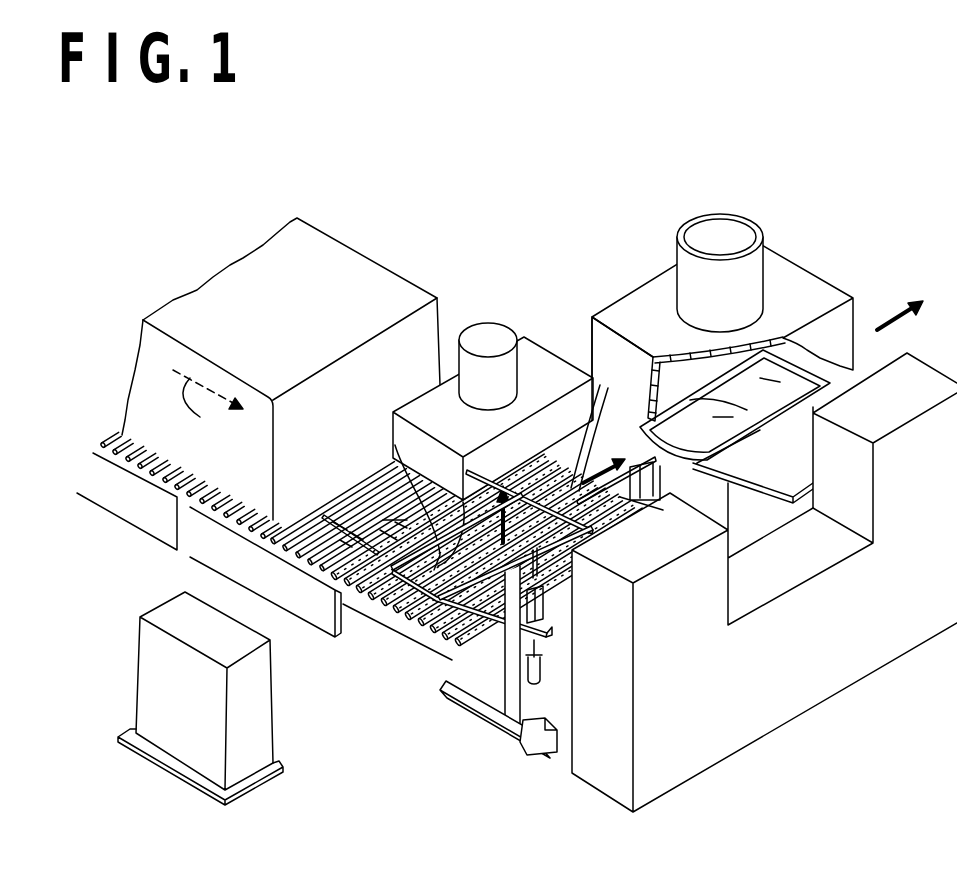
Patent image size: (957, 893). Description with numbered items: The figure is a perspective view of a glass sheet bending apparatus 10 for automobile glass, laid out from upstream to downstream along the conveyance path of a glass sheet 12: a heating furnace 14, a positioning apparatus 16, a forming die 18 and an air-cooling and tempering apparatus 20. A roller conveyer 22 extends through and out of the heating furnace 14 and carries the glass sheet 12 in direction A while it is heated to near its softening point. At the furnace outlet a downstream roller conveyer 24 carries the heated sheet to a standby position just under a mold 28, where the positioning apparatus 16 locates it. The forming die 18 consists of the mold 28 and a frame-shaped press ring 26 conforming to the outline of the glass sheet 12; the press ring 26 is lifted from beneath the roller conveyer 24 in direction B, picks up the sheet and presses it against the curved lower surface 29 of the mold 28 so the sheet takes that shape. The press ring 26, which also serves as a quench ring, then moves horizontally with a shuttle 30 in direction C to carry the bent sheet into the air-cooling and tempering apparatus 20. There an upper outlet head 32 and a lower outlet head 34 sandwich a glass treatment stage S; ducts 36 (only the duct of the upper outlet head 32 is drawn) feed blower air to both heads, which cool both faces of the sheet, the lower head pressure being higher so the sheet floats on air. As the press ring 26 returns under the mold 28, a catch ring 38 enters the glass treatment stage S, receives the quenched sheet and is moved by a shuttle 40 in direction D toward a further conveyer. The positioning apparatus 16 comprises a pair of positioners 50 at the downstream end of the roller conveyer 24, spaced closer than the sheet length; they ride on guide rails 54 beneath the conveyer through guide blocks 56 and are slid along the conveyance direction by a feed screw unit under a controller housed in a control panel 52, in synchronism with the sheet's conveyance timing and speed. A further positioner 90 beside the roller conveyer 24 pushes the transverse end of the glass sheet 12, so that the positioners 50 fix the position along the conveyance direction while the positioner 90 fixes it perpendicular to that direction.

The glass sheet bending apparatus 10 is at (612, 192).
The glass sheet 12 is at (348, 505).
The heating furnace 14 is at (355, 253).
The positioning apparatus 16 is at (547, 584).
The forming die 18 is at (531, 322).
The air-cooling and tempering apparatus 20 is at (835, 274).
The roller conveyer 22 is at (150, 482).
The roller conveyer 24 is at (393, 613).
The press ring 26 is at (394, 442).
The mold 28 is at (558, 377).
The lower surface 29 is at (353, 518).
The shuttle 30 is at (491, 623).
The upper outlet head 32 is at (633, 307).
The lower outlet head 34 is at (622, 447).
The duct 36 is at (764, 230).
The catch ring 38 is at (697, 478).
The shuttle 40 is at (777, 497).
The positioner 50 is at (578, 568).
The control box 52 is at (160, 620).
The guide rail 54 is at (458, 705).
The guide block 56 is at (503, 712).
The positioner 90 is at (607, 487).
The glass treatment stage S is at (646, 360).